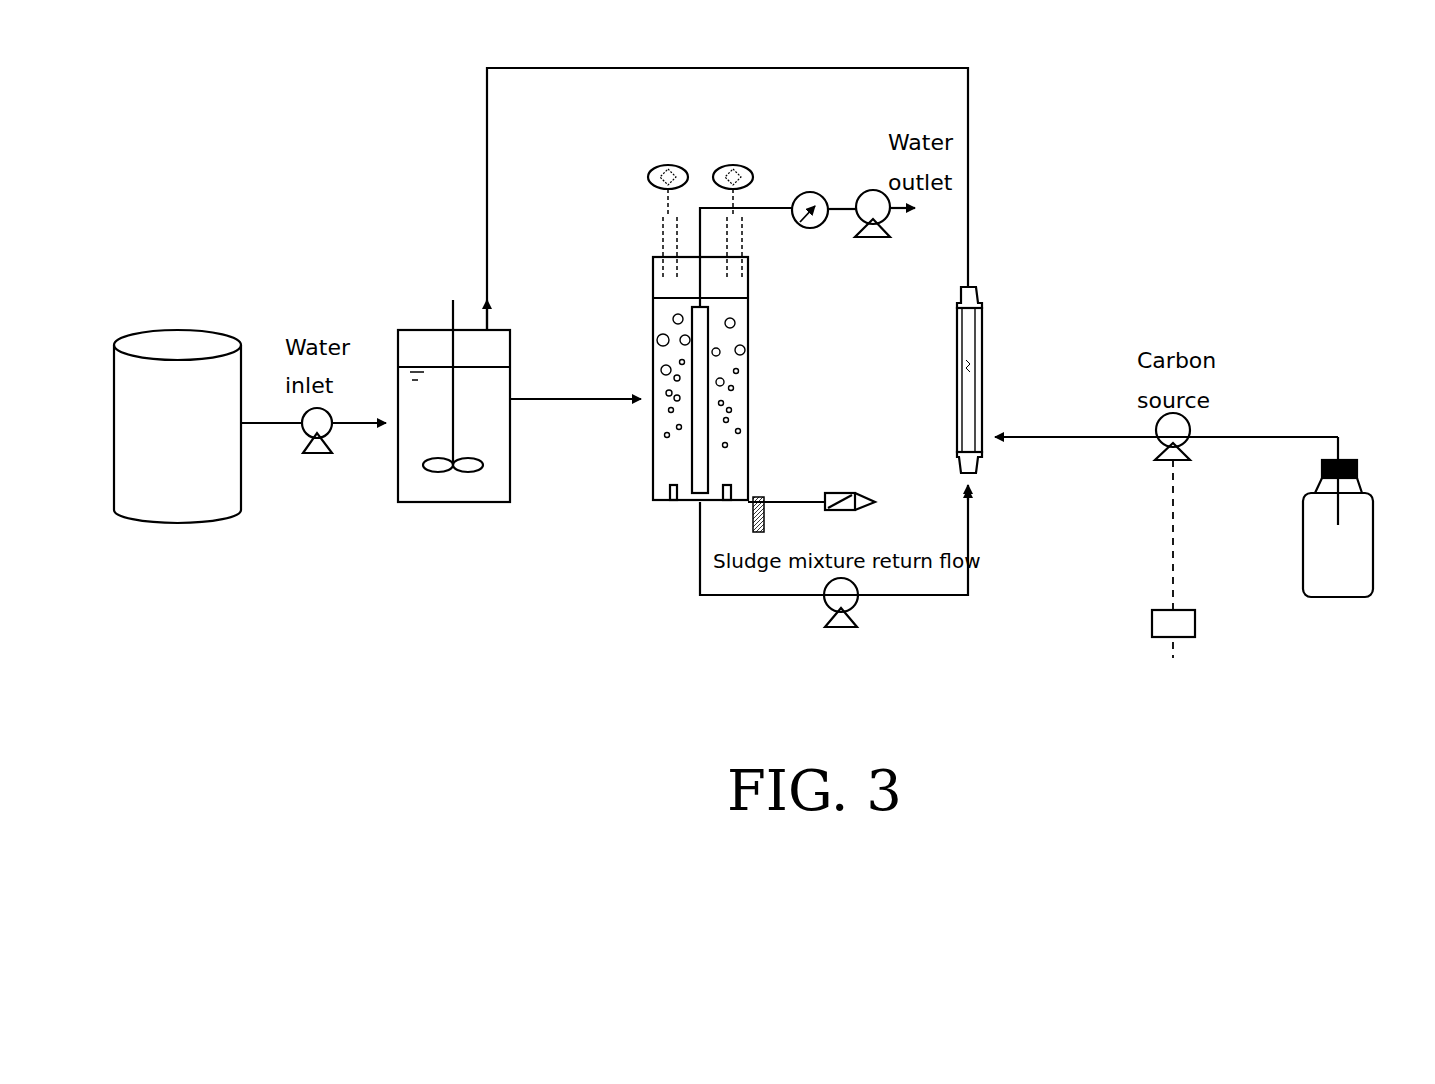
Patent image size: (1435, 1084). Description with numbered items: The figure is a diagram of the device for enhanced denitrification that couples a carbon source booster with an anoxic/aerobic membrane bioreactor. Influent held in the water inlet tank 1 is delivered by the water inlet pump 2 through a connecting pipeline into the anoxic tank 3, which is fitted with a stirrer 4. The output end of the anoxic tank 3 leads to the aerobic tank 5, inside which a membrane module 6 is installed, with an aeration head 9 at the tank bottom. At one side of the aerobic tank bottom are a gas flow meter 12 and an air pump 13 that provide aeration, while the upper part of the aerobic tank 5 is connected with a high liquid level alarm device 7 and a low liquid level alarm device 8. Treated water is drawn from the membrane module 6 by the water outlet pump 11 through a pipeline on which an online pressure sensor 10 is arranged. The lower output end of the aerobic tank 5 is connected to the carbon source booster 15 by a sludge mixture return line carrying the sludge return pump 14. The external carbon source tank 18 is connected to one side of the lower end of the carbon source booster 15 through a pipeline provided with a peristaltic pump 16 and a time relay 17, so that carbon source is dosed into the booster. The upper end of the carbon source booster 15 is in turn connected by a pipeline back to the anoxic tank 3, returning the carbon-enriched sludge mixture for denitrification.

The water inlet tank 1 is at (156, 450).
The water inlet pump 2 is at (315, 424).
The anoxic tank 3 is at (398, 462).
The stirrer 4 is at (433, 473).
The aerobic tank 5 is at (653, 427).
The membrane module 6 is at (695, 437).
The high liquid level alarm device 7 is at (668, 172).
The low liquid level alarm device 8 is at (735, 170).
The aeration head 9 is at (731, 485).
The online pressure sensor 10 is at (808, 192).
The water outlet pump 11 is at (872, 195).
The gas flow meter 12 is at (763, 497).
The air pump 13 is at (838, 507).
The sludge return pump 14 is at (850, 602).
The carbon source booster 15 is at (980, 337).
The peristaltic pump 16 is at (1162, 442).
The time relay 17 is at (1170, 625).
The external carbon source tank 18 is at (1373, 547).